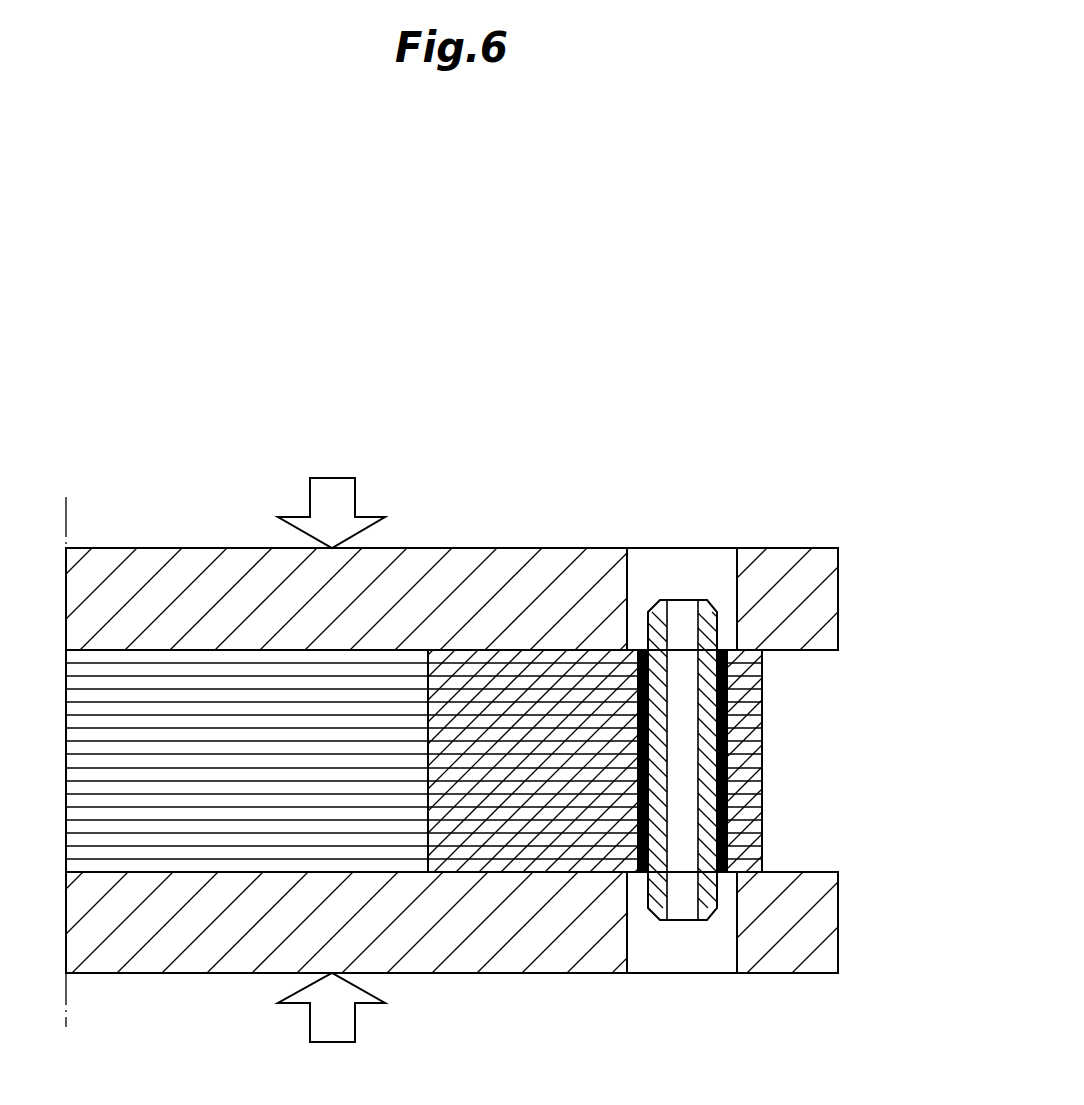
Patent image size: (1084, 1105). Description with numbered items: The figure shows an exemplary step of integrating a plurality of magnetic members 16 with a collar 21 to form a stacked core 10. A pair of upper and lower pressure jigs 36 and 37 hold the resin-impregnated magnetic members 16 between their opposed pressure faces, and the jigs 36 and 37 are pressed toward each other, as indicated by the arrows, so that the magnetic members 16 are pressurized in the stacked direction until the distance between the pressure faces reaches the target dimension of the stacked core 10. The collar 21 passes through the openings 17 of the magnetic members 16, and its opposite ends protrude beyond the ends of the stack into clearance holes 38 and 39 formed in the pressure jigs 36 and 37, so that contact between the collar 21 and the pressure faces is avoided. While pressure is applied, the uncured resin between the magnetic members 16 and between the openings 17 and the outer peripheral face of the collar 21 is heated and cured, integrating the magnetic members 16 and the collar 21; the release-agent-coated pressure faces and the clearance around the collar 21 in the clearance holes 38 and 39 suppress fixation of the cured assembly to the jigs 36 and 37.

The stacked core 10 is at (823, 740).
The magnetic members 16 is at (487, 655).
The openings 17 is at (647, 653).
The collar 21 is at (718, 888).
The upper pressure jig 36 is at (539, 560).
The lower pressure jig 37 is at (523, 958).
The clearance hole 38 is at (628, 580).
The clearance hole 39 is at (628, 935).